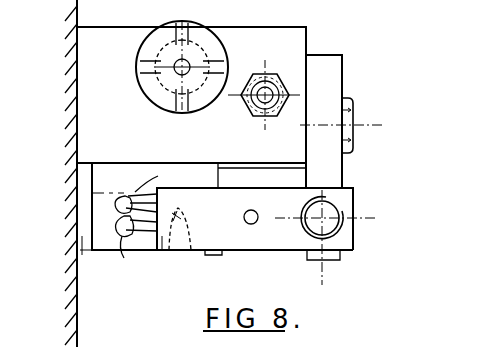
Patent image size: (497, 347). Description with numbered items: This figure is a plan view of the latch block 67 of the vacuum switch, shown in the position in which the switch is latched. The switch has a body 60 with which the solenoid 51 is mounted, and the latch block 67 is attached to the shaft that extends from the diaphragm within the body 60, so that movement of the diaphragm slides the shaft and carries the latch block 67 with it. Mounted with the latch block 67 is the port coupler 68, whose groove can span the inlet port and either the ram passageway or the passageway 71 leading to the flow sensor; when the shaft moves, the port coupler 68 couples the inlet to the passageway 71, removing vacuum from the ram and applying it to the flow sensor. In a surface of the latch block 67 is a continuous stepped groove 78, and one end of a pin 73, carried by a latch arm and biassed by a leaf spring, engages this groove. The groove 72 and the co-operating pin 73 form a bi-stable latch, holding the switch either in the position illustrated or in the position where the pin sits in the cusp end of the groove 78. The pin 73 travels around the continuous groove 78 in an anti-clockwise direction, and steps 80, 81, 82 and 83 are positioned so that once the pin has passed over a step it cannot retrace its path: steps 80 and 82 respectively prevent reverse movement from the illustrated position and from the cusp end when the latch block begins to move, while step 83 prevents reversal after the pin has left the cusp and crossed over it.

The solenoid 51 is at (193, 50).
The body 60 is at (215, 141).
The latch block 67 is at (210, 255).
The port coupler 68 is at (206, 162).
The passageway 71 is at (270, 85).
The groove 72 is at (279, 245).
The pin 73 is at (185, 250).
The continuous stepped groove 78 is at (110, 221).
The step 80 is at (167, 250).
The step 81 is at (128, 197).
The step 82 is at (140, 210).
The step 83 is at (122, 240).